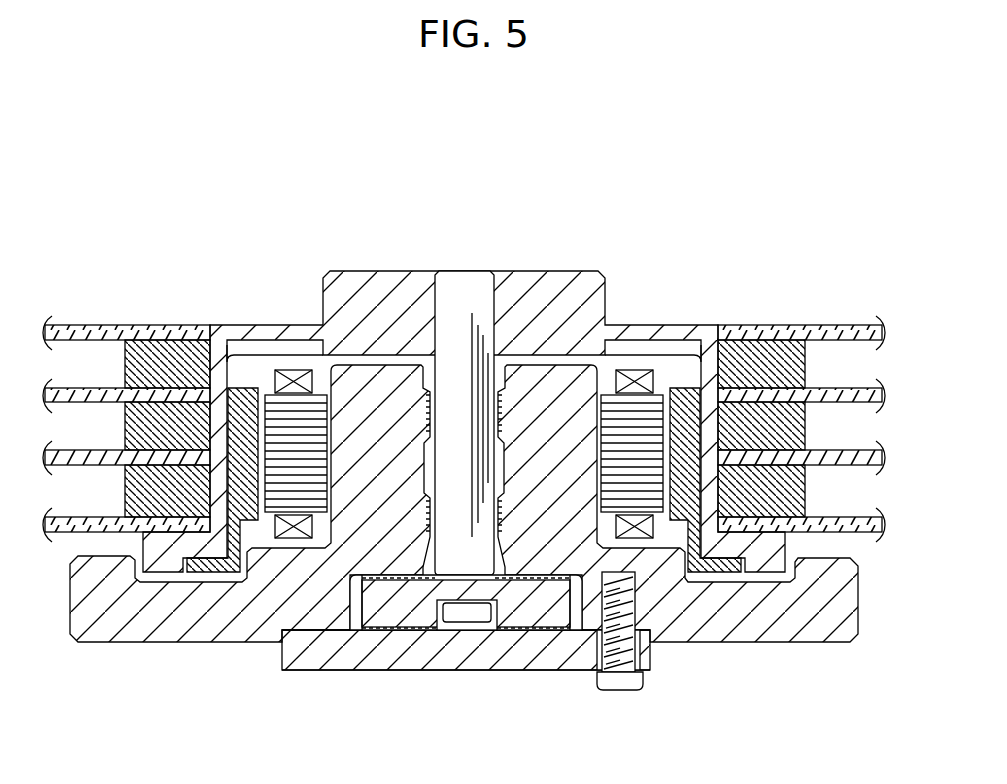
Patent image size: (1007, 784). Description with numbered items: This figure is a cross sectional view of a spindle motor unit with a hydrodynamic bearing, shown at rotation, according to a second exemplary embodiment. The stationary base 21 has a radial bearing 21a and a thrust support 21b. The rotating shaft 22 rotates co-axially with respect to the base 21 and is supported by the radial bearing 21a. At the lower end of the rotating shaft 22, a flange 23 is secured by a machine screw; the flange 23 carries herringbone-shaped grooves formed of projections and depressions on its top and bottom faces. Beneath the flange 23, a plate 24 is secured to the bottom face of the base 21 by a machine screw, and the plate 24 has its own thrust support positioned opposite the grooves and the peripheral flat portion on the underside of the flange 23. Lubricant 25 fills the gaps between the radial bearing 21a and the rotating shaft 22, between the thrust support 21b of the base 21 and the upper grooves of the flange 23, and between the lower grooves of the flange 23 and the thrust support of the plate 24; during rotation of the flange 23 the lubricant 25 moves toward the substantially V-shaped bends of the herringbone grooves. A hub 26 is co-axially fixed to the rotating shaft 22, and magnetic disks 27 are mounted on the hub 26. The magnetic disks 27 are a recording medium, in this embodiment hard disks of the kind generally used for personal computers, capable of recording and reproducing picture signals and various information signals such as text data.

The base 21 is at (747, 632).
The radial bearing 21a is at (520, 575).
The thrust support 21b is at (502, 573).
The rotating shaft 22 is at (458, 300).
The flange 23 is at (517, 610).
The plate 24 is at (435, 660).
The lubricant 25 is at (352, 628).
The hub 26 is at (380, 300).
The magnetic disks 27 is at (773, 327).